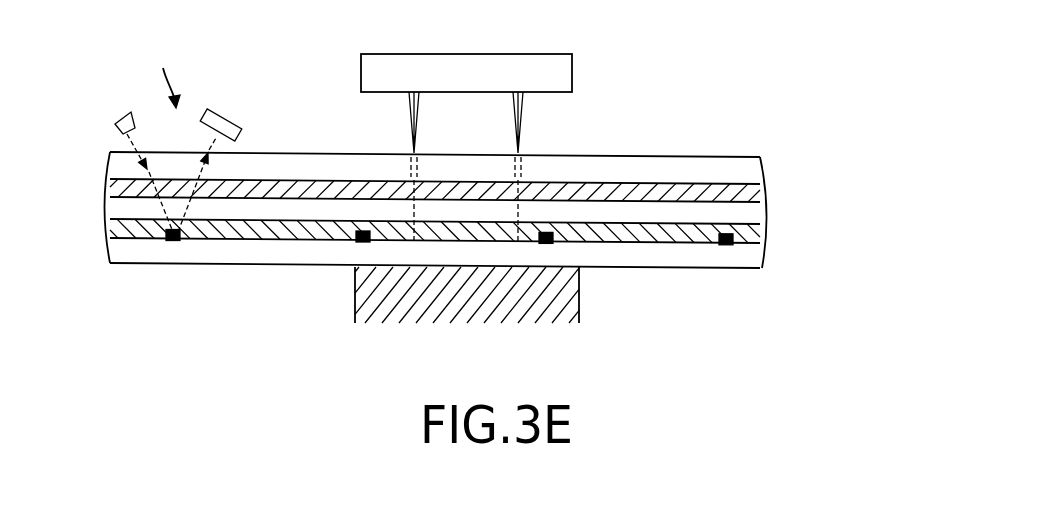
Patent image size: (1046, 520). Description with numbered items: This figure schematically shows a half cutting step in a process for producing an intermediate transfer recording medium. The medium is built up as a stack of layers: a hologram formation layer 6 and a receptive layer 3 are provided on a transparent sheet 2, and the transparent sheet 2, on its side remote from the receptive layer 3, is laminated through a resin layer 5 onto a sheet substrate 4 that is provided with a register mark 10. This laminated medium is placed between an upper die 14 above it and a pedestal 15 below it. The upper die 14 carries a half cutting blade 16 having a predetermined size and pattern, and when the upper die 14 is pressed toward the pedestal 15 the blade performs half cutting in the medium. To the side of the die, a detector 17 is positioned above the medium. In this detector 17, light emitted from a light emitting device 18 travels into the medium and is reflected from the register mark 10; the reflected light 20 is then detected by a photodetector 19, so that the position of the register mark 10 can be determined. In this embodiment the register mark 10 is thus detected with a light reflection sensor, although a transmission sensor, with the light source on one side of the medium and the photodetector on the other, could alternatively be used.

The transparent sheet 2 is at (698, 212).
The receptive layer 3 is at (604, 168).
The sheet substrate 4 is at (700, 260).
The resin layer 5 is at (660, 240).
The hologram formation layer 6 is at (648, 190).
The register mark 10 is at (724, 246).
The upper die 14 is at (465, 63).
The pedestal 15 is at (562, 300).
The half cutting blade 16 is at (524, 106).
The detector 17 is at (166, 73).
The light emitting device 18 is at (115, 125).
The photodetector 19 is at (225, 125).
The reflected light 20 is at (210, 138).